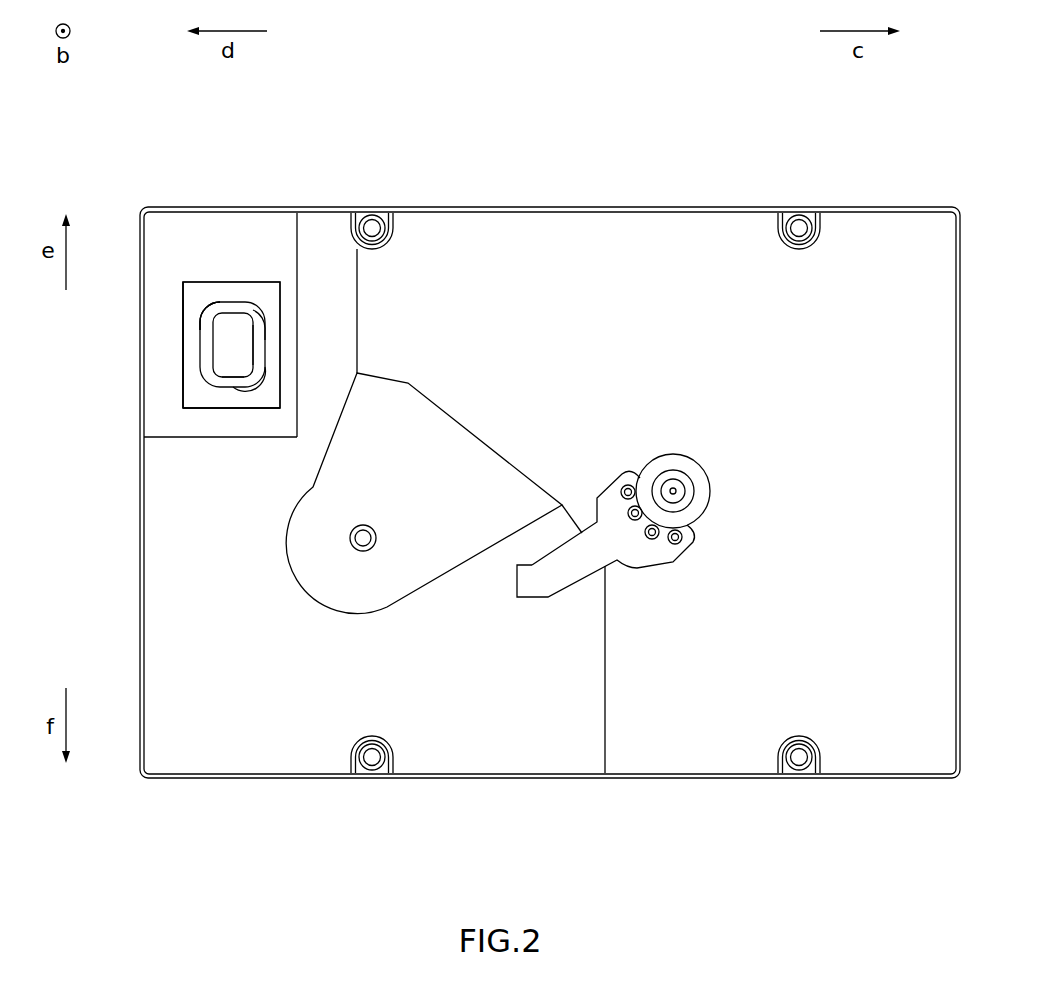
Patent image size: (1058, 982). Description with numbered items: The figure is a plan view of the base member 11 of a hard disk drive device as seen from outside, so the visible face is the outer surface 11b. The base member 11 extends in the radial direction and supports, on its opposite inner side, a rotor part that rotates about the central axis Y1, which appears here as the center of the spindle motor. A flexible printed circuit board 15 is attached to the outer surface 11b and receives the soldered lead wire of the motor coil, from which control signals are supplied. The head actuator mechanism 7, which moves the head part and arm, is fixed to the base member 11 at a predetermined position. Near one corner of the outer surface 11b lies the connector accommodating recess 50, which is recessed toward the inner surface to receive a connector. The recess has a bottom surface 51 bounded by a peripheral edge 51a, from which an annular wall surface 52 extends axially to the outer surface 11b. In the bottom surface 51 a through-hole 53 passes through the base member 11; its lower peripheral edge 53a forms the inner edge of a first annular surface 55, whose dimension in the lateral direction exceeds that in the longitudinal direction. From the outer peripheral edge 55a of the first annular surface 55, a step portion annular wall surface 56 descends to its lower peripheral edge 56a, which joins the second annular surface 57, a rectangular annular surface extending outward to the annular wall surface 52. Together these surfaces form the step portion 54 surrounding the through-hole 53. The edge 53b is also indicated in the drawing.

The head actuator mechanism 7 is at (371, 533).
The base member 11 is at (884, 196).
The outer surface 11b is at (496, 753).
The flexible printed circuit board 15 is at (572, 567).
The central axis Y1 is at (675, 493).
The connector accommodating recess 50 is at (186, 428).
The bottom surface 51 is at (265, 292).
The peripheral edge 51a is at (205, 408).
The annular wall surface 52 is at (189, 401).
The through-hole 53 is at (230, 357).
The peripheral edge of the through-hole 53a is at (253, 348).
The opening bottom edge 53b is at (237, 372).
The step portion 54 is at (268, 329).
The first annular surface 55 is at (225, 304).
The outer peripheral edge of the first annular surface 55a is at (260, 382).
The step portion annular wall surface 56 is at (203, 325).
The lower peripheral edge of the step portion annular wall surface 56a is at (212, 306).
The second annular surface 57 is at (194, 331).